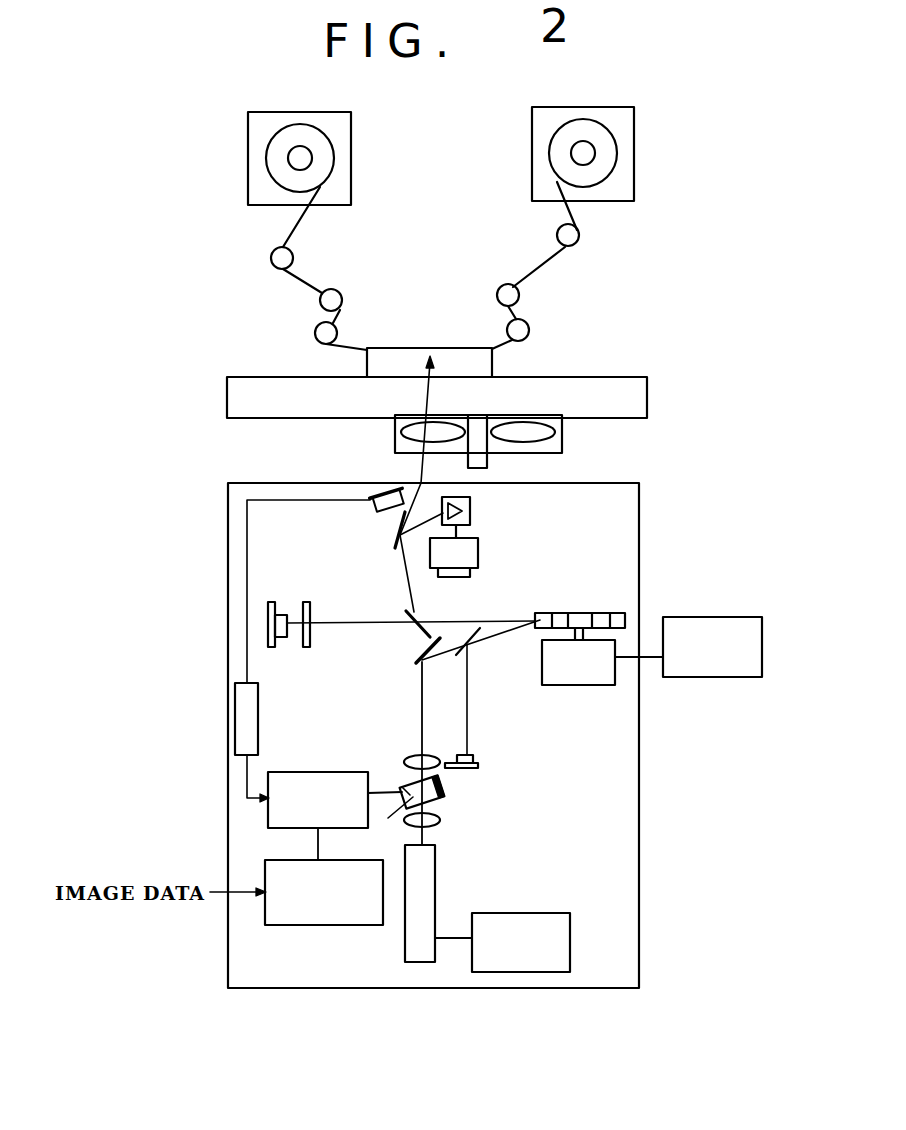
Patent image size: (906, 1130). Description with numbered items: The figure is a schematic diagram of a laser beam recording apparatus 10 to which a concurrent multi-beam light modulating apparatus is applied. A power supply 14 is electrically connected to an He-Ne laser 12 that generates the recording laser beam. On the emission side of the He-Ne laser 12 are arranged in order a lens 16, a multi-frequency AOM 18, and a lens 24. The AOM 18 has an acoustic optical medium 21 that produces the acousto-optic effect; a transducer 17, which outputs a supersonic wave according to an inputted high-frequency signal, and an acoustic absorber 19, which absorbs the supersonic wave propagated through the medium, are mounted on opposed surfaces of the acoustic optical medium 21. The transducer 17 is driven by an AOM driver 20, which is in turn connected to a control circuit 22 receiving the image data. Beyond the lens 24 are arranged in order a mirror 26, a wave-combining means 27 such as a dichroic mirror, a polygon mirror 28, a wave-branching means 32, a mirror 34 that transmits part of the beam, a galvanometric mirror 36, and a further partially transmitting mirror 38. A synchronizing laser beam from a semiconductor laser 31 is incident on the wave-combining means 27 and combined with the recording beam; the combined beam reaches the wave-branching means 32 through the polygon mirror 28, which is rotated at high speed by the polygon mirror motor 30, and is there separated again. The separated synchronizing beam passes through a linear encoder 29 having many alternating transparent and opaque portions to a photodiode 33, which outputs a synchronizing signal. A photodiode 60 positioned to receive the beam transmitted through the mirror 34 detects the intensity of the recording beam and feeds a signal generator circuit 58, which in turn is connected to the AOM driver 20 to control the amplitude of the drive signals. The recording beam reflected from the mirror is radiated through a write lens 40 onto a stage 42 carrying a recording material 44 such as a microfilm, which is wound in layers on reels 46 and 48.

The printing apparatus 10 is at (202, 321).
The He-Ne laser 12 is at (405, 948).
The power supply 14 is at (570, 945).
The lens 16 is at (440, 820).
The transducer 17 is at (403, 788).
The multi-frequency AOM 18 is at (460, 776).
The acoustic absorber 19 is at (445, 792).
The AOM driver 20 is at (318, 772).
The acoustic optical medium 21 is at (392, 825).
The control circuit 22 is at (302, 925).
The lens 24 is at (415, 755).
The mirror 26 is at (423, 648).
The wave-combining means 27 is at (460, 652).
The polygon mirror 28 is at (585, 613).
The linear encoder 29 is at (306, 602).
The polygon mirror motor 30 is at (708, 617).
The semiconductor laser 31 is at (478, 765).
The wave-branching means 32 is at (410, 615).
The photodiode 33 is at (272, 602).
The mirror 34 is at (395, 540).
The galvanometric mirror 36 is at (483, 550).
The mirror 38 is at (422, 485).
The write lens 40 is at (400, 440).
The stage 42 is at (492, 362).
The recording material 44 is at (525, 272).
The reel 46 is at (312, 158).
The reel 48 is at (595, 153).
The signal generator circuit 58 is at (258, 701).
The photodiode 60 is at (372, 485).